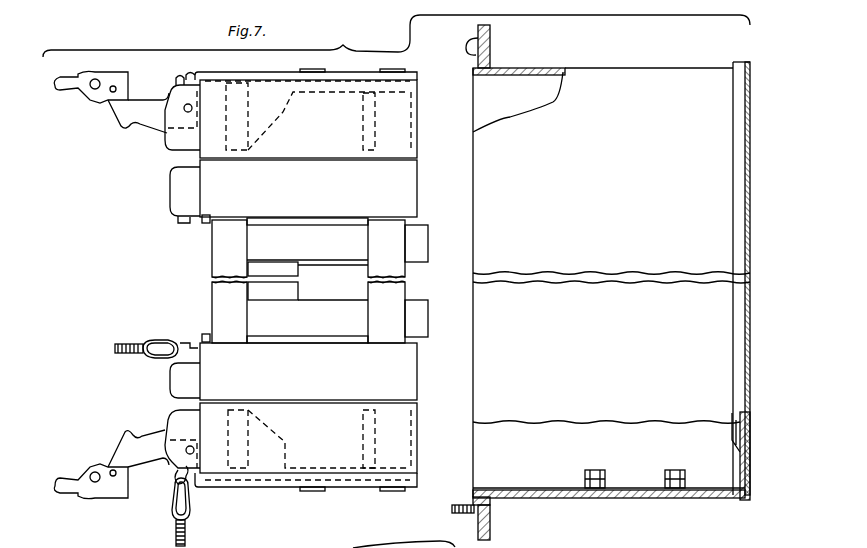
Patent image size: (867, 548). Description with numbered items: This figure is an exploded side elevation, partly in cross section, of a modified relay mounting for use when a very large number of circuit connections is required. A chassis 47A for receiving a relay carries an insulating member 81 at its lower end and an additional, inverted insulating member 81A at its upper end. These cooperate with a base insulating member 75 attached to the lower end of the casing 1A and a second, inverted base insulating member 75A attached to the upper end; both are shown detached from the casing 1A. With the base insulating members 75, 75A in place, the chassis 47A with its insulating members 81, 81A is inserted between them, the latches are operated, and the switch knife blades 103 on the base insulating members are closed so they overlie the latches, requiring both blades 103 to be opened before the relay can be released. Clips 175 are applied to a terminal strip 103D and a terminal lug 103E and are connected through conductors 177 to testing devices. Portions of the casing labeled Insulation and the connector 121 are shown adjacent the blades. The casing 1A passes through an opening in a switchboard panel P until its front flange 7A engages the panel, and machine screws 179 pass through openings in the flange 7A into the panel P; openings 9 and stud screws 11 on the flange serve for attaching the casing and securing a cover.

The casing 1A is at (720, 214).
The front flange 7A is at (470, 500).
The openings 9 is at (353, 547).
The stud screws 11 is at (450, 525).
The chassis 47A is at (410, 290).
The base insulating member 75 is at (458, 450).
The second base insulating member 75A is at (418, 121).
The insulating member 81 is at (458, 390).
The additional insulating member 81A is at (458, 187).
The switch knife blade 103 is at (65, 80).
The terminal strip 103D is at (182, 214).
The terminal lug 103E is at (173, 482).
The connector body 121 is at (142, 102).
The clips 175 is at (165, 359).
The conductors 177 is at (120, 346).
The machine screws 179 is at (468, 43).
The switchboard panel P is at (492, 42).
The insulation Insulation is at (220, 175).